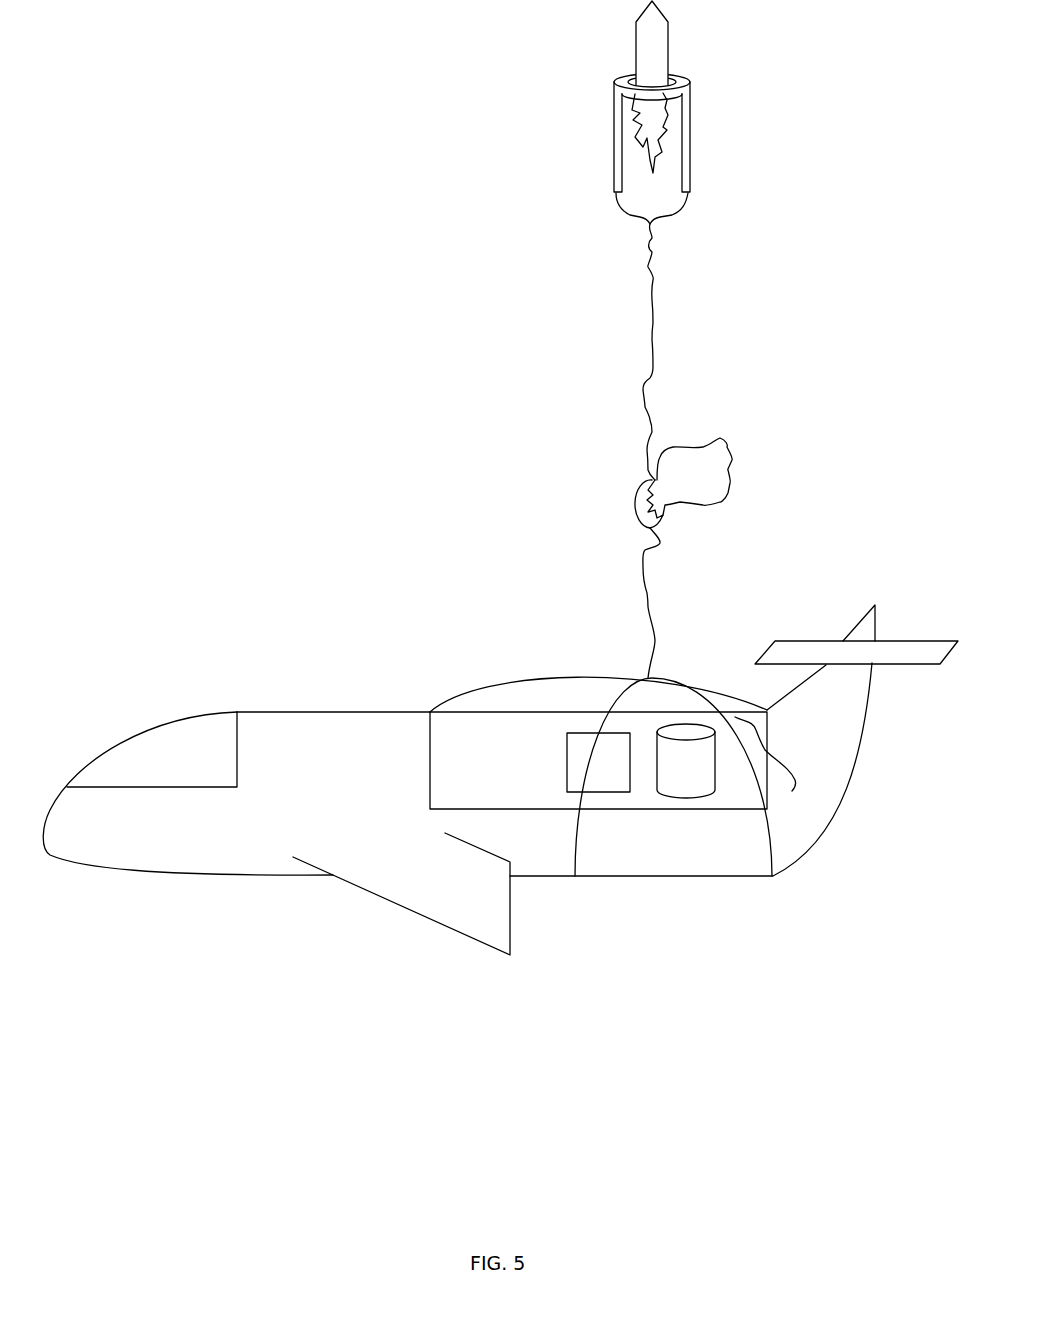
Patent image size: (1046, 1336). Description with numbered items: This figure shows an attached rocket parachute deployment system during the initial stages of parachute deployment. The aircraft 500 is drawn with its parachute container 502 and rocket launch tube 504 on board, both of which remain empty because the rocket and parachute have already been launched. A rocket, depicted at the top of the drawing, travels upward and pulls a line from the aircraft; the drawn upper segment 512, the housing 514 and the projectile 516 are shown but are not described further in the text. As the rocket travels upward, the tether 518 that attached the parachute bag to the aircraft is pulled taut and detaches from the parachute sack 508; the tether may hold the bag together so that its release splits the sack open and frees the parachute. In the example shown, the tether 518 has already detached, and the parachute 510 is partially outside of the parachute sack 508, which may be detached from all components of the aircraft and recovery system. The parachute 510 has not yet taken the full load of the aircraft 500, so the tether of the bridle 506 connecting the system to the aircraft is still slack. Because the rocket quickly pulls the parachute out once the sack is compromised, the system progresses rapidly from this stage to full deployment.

The aircraft 500 is at (683, 877).
The parachute container 502 is at (567, 766).
The rocket launch tube 504 is at (690, 798).
The bridle 506 is at (647, 605).
The parachute sack 508 is at (630, 508).
The parachute 510 is at (730, 463).
The upper tether section 512 is at (648, 298).
The launcher housing 514 is at (615, 125).
The rocket projectile 516 is at (636, 45).
The tether 518 is at (766, 748).